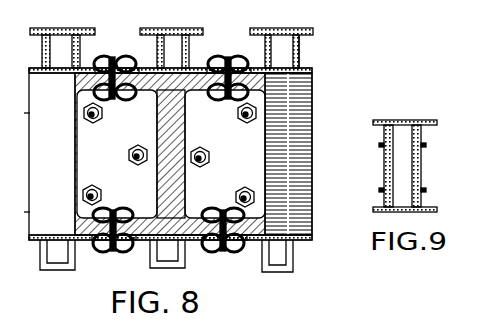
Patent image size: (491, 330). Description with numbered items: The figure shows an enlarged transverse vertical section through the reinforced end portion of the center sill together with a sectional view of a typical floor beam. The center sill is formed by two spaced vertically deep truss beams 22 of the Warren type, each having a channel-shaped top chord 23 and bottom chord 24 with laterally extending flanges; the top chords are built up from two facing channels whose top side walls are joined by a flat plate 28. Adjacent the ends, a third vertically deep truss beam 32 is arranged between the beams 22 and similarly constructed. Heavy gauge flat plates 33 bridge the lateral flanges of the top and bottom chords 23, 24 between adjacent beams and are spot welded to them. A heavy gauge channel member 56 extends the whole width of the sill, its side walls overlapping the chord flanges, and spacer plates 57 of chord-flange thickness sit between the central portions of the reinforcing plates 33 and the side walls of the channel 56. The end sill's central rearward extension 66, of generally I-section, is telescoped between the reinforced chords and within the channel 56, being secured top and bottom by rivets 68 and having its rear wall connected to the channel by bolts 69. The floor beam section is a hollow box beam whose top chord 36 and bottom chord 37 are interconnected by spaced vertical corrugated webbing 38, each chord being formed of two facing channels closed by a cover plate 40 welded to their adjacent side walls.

In FIG. 8, the truss beam 22 is at (89, 27).
In FIG. 8, the third truss beam 32 is at (162, 27).
In FIG. 8, the flat plate 28 is at (289, 26).
In FIG. 8, the top chord 23 is at (300, 52).
In FIG. 8, the reinforcing plate 33 is at (211, 70).
In FIG. 8, the rivets 68 is at (229, 56).
In FIG. 8, the spacer plate 57 is at (196, 241).
In FIG. 8, the reinforcing channel member 56 is at (301, 117).
In FIG. 8, the bolts 69 is at (138, 145).
In FIG. 8, the central rearward extension 66 is at (177, 183).
In FIG. 8, the bottom chord 24 is at (282, 272).
In FIG. 9, the cover plate 40 is at (410, 121).
In FIG. 9, the top chord 36 is at (383, 138).
In FIG. 9, the corrugated webbing 38 is at (384, 168).
In FIG. 9, the bottom chord 37 is at (380, 198).